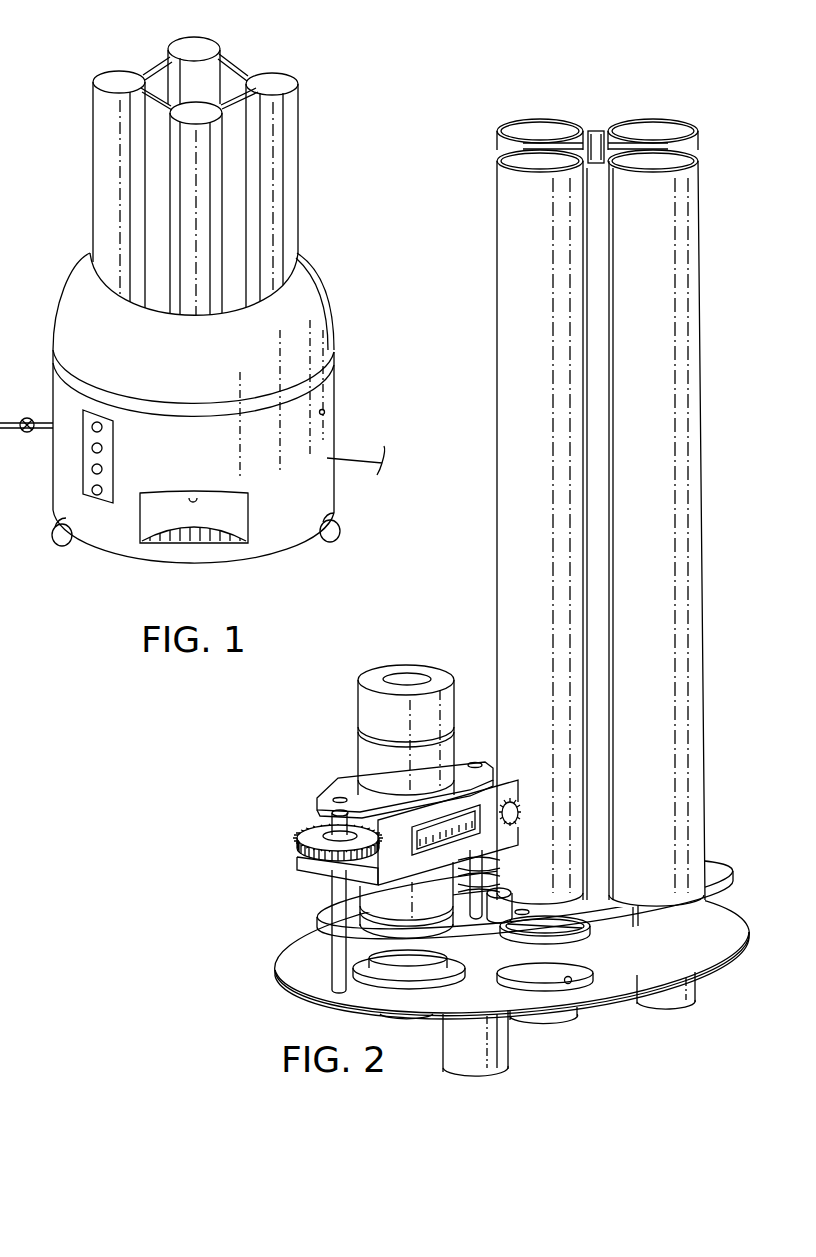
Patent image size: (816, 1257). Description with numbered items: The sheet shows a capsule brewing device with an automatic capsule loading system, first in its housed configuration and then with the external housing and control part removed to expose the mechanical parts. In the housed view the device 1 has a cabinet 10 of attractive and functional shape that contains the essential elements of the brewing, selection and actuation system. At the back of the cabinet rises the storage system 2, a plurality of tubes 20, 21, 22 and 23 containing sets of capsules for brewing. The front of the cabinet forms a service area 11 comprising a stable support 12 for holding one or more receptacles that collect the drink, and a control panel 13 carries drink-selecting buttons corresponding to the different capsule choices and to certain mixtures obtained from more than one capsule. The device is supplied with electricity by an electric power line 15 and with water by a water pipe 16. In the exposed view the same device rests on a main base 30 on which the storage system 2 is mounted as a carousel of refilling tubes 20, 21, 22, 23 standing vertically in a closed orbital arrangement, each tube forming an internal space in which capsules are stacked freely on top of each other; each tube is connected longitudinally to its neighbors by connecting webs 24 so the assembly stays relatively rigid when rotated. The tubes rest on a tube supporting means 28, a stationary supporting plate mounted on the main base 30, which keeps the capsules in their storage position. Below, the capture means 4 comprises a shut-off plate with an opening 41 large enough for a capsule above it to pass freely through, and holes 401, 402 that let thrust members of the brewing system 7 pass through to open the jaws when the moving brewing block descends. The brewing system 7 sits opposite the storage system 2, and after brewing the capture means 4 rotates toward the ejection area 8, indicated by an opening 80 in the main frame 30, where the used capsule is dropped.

In FIG. 1, the filling apparatus 1 is at (333, 278).
In FIG. 1, the storage system 2 is at (84, 162).
In FIG. 2, the storage system 2 is at (707, 337).
In FIG. 2, the capture means 4 is at (471, 1084).
In FIG. 2, the brewing system 7 is at (347, 769).
In FIG. 2, the ejection area 8 is at (630, 952).
In FIG. 1, the cabinet 10 is at (53, 315).
In FIG. 1, the service area 11 is at (257, 518).
In FIG. 1, the stable support 12 is at (214, 545).
In FIG. 1, the control panel 13 is at (105, 512).
In FIG. 1, the electric power line 15 is at (380, 462).
In FIG. 1, the water pipe 16 is at (42, 420).
In FIG. 1, the refilling tube 20 is at (280, 72).
In FIG. 2, the refilling tube 20 is at (707, 163).
In FIG. 1, the refilling tube 21 is at (215, 100).
In FIG. 2, the refilling tube 21 is at (699, 121).
In FIG. 1, the refilling tube 22 is at (181, 40).
In FIG. 2, the refilling tube 22 is at (576, 121).
In FIG. 1, the refilling tube 23 is at (107, 72).
In FIG. 2, the refilling tube 23 is at (495, 160).
In FIG. 2, the connecting web 24 is at (601, 172).
In FIG. 2, the tube supporting means 28 is at (733, 868).
In FIG. 2, the main base 30 is at (737, 960).
In FIG. 2, the opening 41 is at (578, 936).
In FIG. 2, the opening 80 is at (569, 984).
In FIG. 2, the hole 401 is at (496, 895).
In FIG. 2, the hole 402 is at (522, 916).